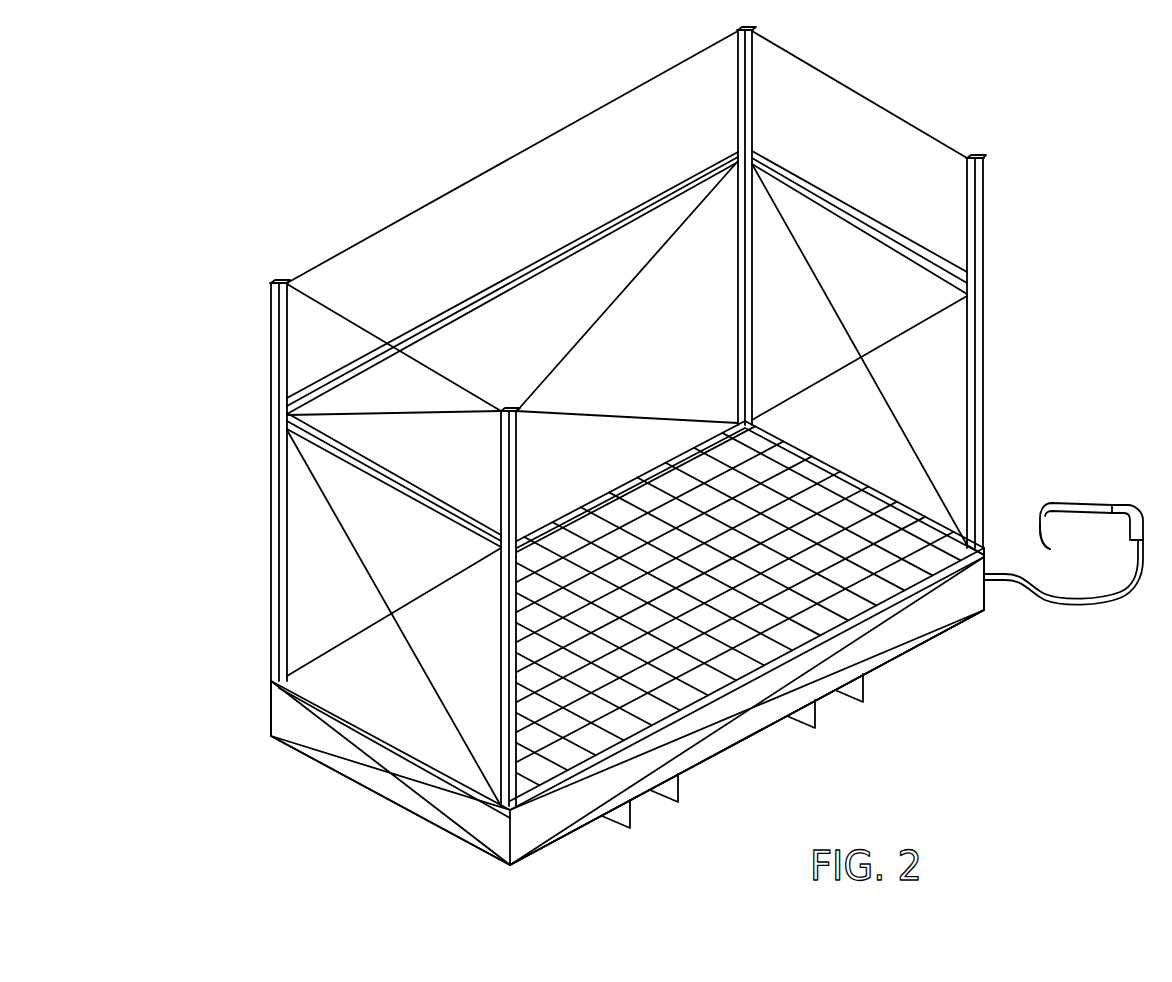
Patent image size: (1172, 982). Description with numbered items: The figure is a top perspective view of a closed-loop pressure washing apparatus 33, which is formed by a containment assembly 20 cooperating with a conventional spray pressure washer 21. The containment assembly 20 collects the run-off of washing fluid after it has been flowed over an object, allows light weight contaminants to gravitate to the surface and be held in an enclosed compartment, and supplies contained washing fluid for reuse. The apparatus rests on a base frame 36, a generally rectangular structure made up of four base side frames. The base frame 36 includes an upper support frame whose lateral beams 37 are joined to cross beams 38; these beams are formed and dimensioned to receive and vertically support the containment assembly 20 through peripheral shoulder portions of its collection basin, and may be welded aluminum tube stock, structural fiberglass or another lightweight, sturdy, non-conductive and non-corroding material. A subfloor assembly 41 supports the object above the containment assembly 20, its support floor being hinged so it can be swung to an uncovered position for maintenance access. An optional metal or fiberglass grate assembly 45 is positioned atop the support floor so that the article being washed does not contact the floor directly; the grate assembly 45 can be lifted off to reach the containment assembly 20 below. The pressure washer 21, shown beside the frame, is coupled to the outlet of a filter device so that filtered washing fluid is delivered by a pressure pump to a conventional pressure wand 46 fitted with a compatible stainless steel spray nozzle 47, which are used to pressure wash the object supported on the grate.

The containment assembly 20 is at (340, 797).
The pressure washer 21 is at (1071, 565).
The closed-loop pressure washing apparatus 33 is at (228, 243).
The base frame 36 is at (738, 755).
The lateral beams 37 is at (268, 698).
The cross beams 38 is at (418, 807).
The subfloor assembly 41 is at (902, 490).
The grate assembly 45 is at (950, 547).
The pressure wand 46 is at (1122, 507).
The spray nozzle 47 is at (1050, 549).